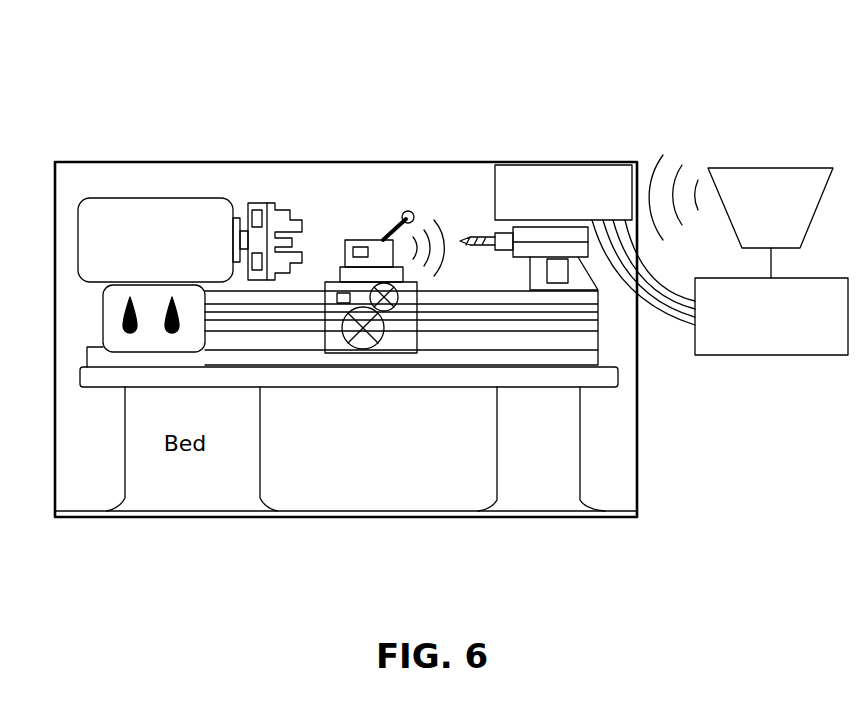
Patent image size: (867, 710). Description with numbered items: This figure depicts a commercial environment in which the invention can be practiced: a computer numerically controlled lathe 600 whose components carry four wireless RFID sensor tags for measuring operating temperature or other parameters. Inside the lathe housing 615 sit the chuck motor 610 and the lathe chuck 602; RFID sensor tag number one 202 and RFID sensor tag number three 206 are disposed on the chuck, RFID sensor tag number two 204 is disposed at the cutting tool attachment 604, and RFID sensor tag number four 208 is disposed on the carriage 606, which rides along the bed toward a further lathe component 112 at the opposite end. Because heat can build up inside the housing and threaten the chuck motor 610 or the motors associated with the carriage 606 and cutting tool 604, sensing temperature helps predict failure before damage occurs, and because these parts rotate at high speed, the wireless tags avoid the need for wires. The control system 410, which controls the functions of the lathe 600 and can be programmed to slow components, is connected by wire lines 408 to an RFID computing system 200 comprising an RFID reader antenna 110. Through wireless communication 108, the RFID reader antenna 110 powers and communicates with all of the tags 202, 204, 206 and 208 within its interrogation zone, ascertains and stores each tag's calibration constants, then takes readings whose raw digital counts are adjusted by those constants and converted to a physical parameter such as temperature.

The computer numerically controlled lathe 600 is at (352, 51).
The lathe 615 is at (100, 162).
The chuck motor 610 is at (76, 220).
The RFID sensor tag #1 202 is at (258, 210).
The chuck 602 is at (264, 203).
The RFID sensor tag #3 206 is at (257, 280).
The RFID sensor tag #2 204 is at (363, 245).
The cutting tool attachment 604 is at (373, 240).
The carriage 606 is at (393, 340).
The RFID sensor tag #4 208 is at (337, 298).
The tailstock 112 is at (524, 258).
The control system 410 is at (495, 183).
The wire lines 408 is at (655, 322).
The RF signal 108 is at (673, 138).
The RFID reader antenna 110 is at (727, 168).
The RFID computing system 200 is at (771, 316).